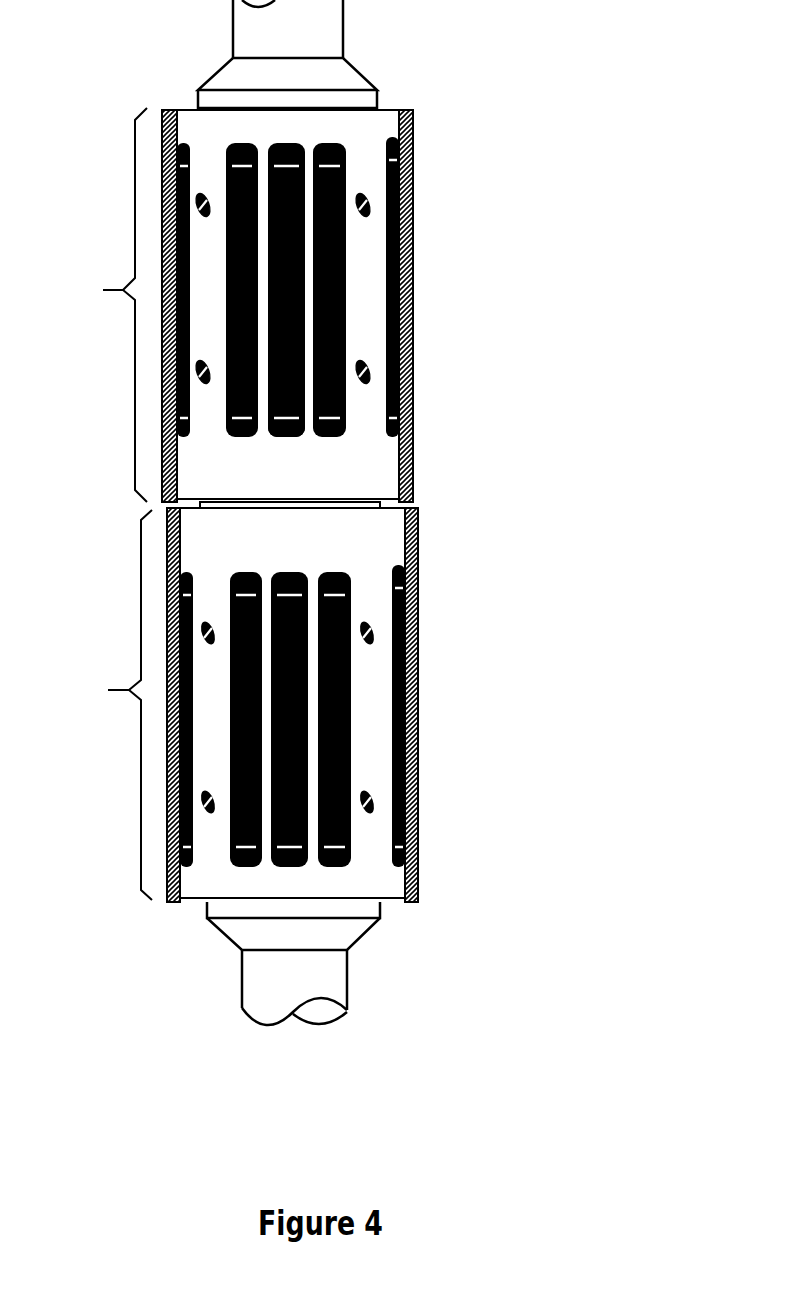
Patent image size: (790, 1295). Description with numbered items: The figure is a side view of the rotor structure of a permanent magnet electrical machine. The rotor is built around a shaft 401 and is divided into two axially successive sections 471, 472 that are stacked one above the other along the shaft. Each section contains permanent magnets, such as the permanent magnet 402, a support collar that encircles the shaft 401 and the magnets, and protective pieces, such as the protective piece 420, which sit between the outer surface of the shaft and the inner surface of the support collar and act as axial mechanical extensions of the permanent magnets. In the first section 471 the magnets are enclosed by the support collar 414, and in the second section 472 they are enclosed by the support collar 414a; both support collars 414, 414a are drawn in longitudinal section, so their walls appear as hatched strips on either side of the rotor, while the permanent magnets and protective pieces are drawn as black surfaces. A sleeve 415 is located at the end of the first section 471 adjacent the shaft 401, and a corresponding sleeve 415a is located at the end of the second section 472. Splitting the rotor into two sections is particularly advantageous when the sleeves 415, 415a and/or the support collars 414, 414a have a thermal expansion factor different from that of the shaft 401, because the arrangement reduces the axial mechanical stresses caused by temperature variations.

The shaft 401 is at (366, 78).
The sleeve 415 is at (393, 108).
The support collar 414 is at (413, 228).
The permanent magnet 402 is at (228, 390).
The protective piece 420 is at (277, 438).
The first axially successive section 471 is at (98, 305).
The second axially successive section 472 is at (102, 705).
The support collar 414a is at (418, 660).
The sleeve 415a is at (385, 905).